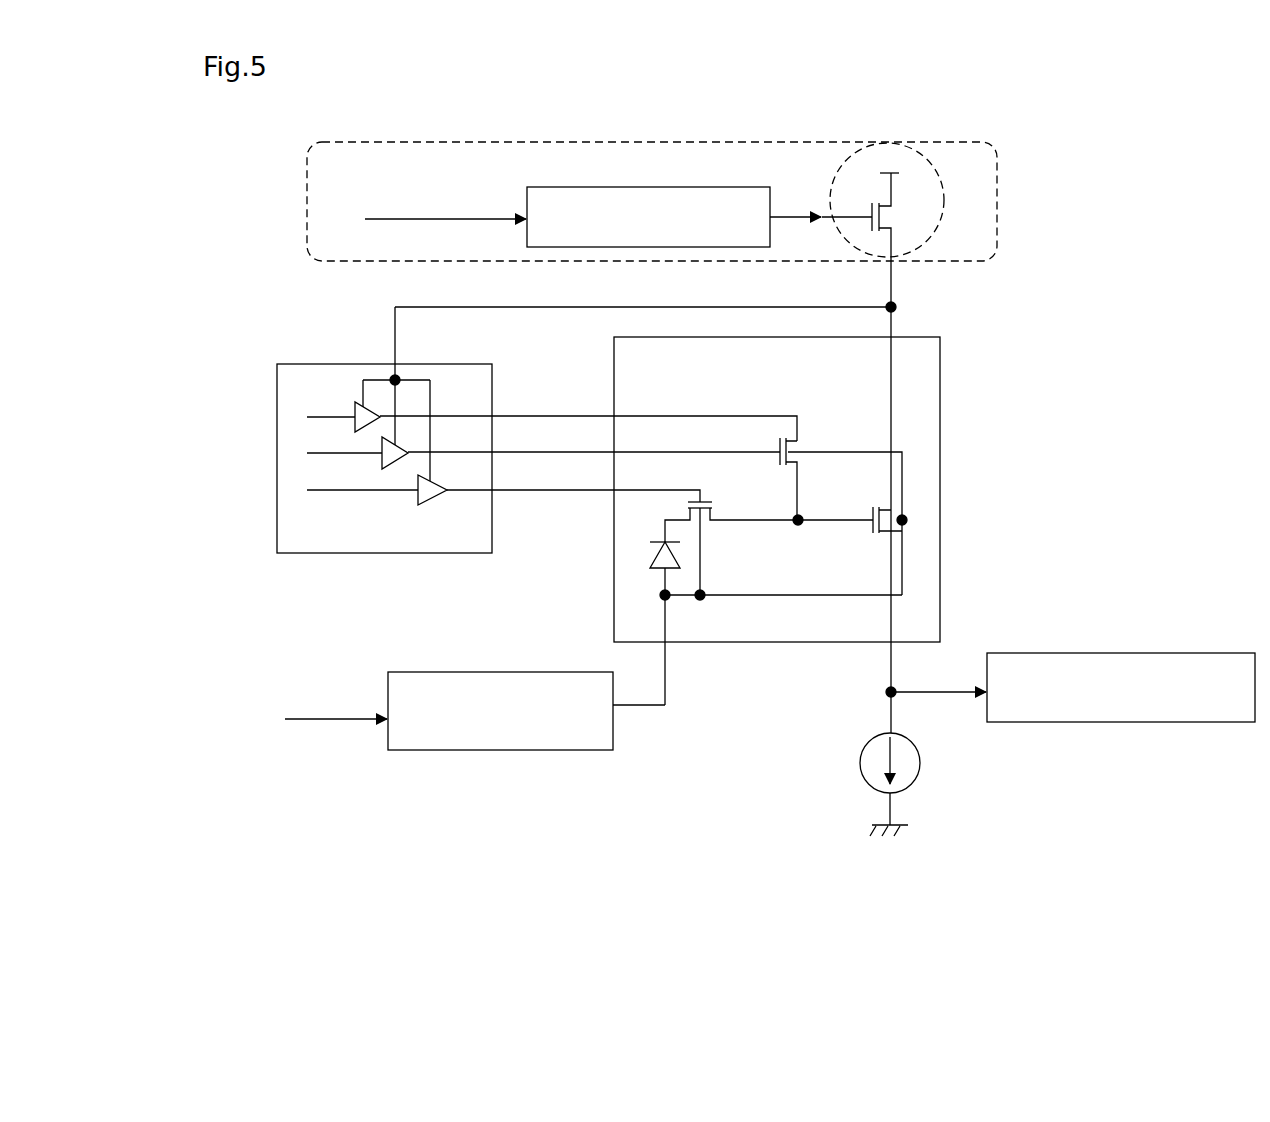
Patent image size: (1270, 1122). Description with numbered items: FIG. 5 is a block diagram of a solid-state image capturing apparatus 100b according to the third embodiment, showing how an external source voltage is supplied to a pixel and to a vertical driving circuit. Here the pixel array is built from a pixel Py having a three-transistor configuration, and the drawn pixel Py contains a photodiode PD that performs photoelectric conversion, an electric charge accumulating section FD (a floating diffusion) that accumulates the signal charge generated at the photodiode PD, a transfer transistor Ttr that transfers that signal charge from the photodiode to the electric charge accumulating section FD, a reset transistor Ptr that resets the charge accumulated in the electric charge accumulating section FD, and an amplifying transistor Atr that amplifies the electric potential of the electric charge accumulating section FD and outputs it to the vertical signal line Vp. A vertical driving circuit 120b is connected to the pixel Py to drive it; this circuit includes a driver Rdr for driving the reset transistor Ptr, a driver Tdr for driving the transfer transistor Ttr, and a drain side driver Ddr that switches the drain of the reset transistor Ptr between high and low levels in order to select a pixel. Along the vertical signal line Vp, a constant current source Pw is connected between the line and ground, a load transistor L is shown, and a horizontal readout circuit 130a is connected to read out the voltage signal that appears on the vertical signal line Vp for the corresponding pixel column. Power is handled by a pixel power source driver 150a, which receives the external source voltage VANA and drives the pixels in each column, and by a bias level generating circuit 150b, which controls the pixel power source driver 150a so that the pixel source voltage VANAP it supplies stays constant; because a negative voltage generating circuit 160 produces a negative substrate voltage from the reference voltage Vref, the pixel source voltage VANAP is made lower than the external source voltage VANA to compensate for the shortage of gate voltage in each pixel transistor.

The solid-state image capturing apparatus 100b is at (627, 855).
The vertical driving circuit 120b is at (340, 430).
The horizontal readout circuit 130a is at (1100, 715).
The pixel power source driver 150a is at (932, 198).
The bias level generating circuit 150b is at (647, 195).
The negative voltage generating circuit 160 is at (537, 747).
The load transistor L is at (902, 193).
The pixel Py is at (781, 521).
The photodiode PD is at (633, 588).
The transfer transistor Ttr is at (708, 527).
The reset transistor Ptr is at (800, 462).
The amplifying transistor Atr is at (893, 512).
The electric charge accumulating section FD is at (800, 525).
The vertical signal line Vp is at (890, 667).
The constant current source Pw is at (903, 763).
The drain side driver Ddr is at (357, 403).
The driver Rdr is at (380, 442).
The driver Tdr is at (420, 497).
The reference voltage Vref is at (445, 205).
The external source voltage VANA is at (887, 163).
The pixel source voltage VANAP is at (645, 298).